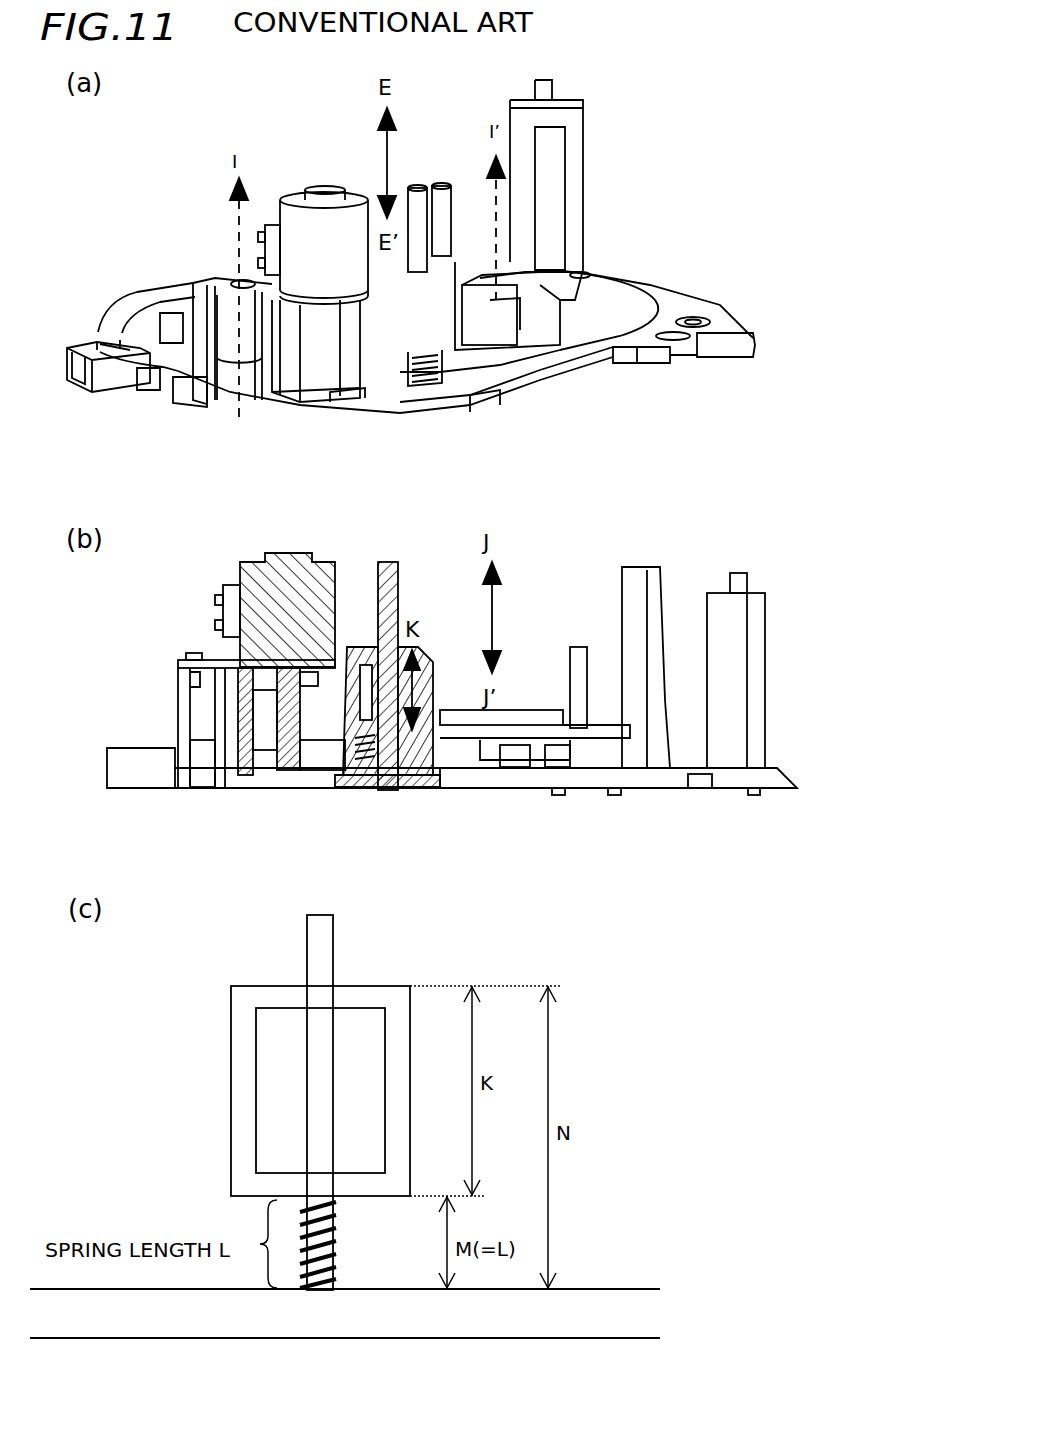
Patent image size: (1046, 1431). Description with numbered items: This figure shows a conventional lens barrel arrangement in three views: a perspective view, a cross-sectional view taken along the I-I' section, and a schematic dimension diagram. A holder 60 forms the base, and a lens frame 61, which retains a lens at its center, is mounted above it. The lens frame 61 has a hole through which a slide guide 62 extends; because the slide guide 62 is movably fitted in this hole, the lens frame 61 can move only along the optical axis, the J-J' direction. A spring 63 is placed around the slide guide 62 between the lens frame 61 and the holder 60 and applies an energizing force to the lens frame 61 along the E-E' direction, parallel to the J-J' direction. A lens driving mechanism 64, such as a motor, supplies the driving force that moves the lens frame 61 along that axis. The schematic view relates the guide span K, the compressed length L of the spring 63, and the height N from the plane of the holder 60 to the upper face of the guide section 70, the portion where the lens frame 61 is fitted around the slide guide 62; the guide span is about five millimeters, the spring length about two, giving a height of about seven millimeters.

The holder 60 is at (682, 262).
The lens frame 61 is at (470, 258).
The slide guide 62 is at (417, 186).
The spring 63 is at (435, 366).
The lens driving mechanism 64 is at (318, 188).
The guide section 70 is at (272, 997).